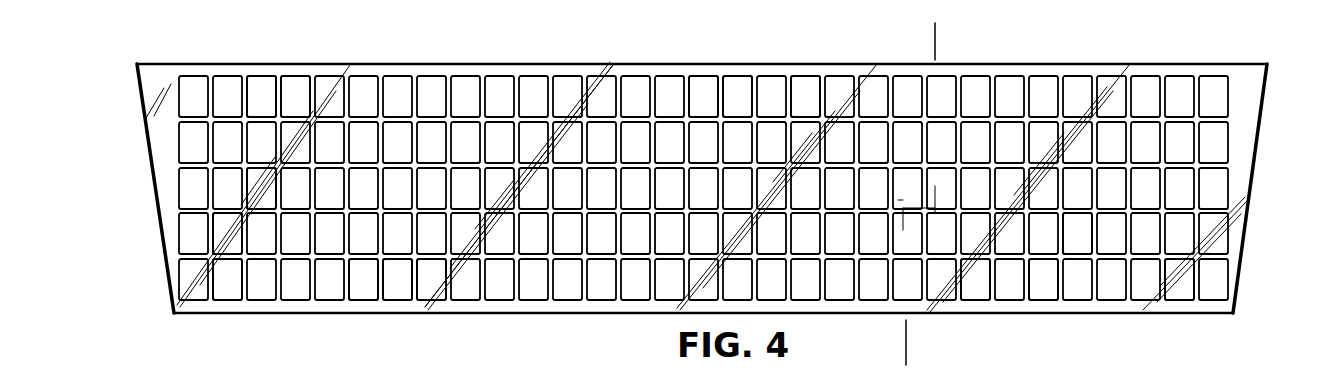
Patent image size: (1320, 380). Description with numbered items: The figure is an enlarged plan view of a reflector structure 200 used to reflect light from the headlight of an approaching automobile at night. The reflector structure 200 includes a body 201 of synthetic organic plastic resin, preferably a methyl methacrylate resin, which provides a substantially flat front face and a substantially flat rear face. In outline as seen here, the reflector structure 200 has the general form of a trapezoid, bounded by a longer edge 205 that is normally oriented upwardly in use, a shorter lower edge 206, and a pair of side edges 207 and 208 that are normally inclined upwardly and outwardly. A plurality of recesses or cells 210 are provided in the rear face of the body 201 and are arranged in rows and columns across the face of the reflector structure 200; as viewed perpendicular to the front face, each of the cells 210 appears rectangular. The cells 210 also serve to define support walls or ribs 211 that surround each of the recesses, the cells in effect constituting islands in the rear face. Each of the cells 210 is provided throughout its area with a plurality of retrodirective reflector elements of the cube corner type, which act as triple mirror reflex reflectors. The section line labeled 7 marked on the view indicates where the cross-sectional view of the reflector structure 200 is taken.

The reflector structure 200 is at (497, 43).
The body 201 is at (1045, 72).
The longer edge 205 is at (599, 82).
The shorter lower edge 206 is at (539, 314).
The side edge 207 is at (151, 171).
The side edge 208 is at (1250, 182).
The recesses or cells 210 is at (283, 100).
The support walls or ribs 211 is at (693, 63).
The section line 7- 7 is at (925, 45).